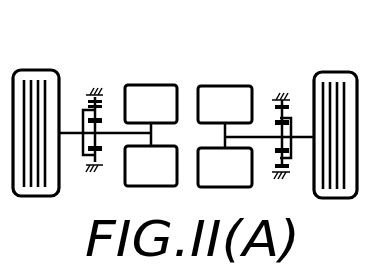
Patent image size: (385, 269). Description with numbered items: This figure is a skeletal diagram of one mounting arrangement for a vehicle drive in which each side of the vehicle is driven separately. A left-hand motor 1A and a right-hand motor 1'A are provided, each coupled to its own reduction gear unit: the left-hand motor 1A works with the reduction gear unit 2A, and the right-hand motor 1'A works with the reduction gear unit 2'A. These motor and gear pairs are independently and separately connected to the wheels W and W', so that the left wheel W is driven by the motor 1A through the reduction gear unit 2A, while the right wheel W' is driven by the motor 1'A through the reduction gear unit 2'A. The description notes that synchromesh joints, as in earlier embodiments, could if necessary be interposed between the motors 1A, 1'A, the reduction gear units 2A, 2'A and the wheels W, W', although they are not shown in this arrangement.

The wheel W is at (36, 106).
The wheel W' is at (344, 113).
The left-hand motor 1A is at (153, 85).
The right-hand motor 1'A is at (224, 108).
The reduction gear unit 2A is at (83, 104).
The reduction gear unit 2'A is at (289, 106).